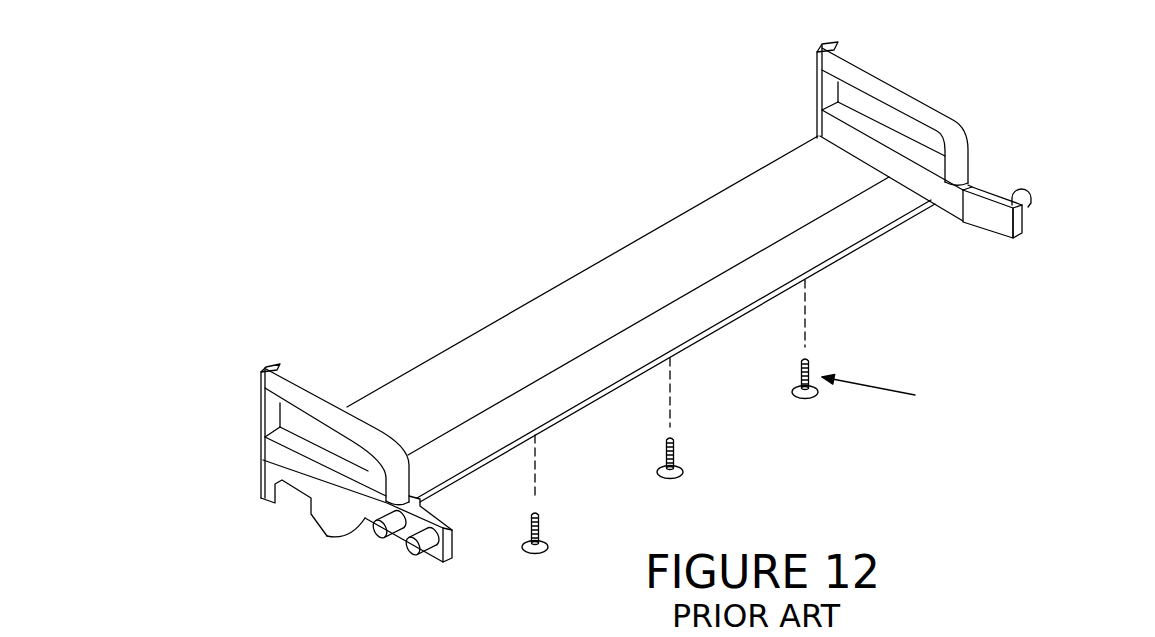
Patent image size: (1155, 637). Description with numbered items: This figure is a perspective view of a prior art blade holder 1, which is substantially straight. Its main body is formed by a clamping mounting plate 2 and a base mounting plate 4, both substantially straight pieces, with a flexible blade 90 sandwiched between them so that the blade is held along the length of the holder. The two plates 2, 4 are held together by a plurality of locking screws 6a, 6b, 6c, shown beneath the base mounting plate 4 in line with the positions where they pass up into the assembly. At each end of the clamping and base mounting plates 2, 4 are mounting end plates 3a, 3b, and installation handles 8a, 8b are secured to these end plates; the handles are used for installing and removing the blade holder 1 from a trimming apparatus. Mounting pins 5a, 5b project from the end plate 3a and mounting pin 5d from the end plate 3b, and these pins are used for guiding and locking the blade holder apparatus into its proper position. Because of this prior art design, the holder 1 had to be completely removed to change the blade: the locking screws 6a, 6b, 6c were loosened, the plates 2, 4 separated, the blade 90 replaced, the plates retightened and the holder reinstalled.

The blade holder 1 is at (608, 196).
The clamping mounting plate 2 is at (578, 305).
The mounting end plate 3a is at (290, 462).
The mounting end plate 3b is at (990, 182).
The base mounting plate 4 is at (548, 428).
The mounting pin 5a is at (373, 534).
The mounting pin 5b is at (413, 556).
The mounting pin 5d is at (1032, 189).
The locking screw 6a is at (538, 557).
The locking screw 6b is at (672, 480).
The locking screw 6c is at (815, 400).
The installation handle 8a is at (270, 366).
The installation handle 8b is at (907, 90).
The flexible blade 90 is at (850, 247).